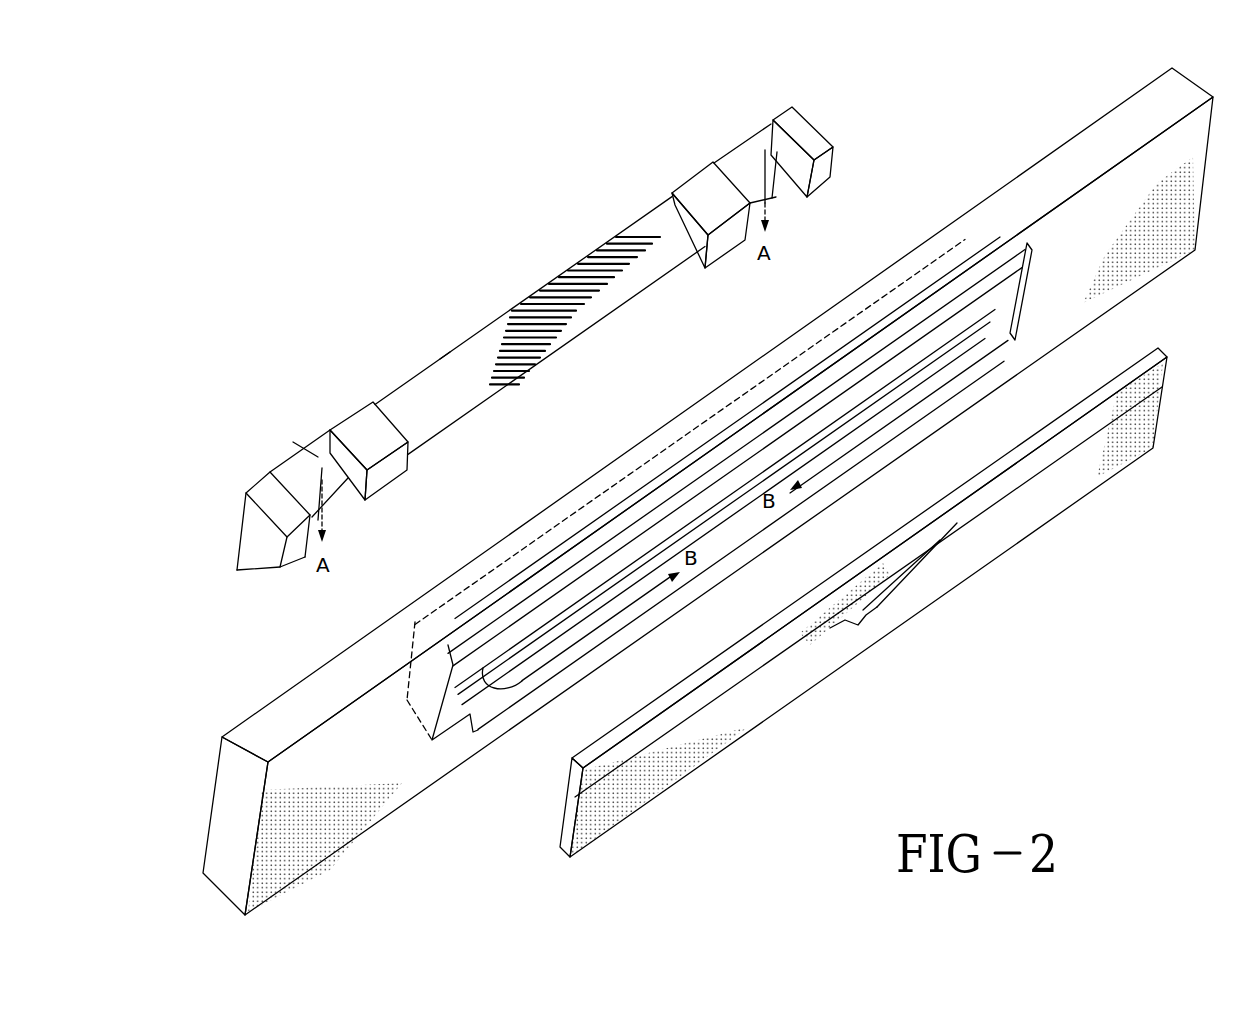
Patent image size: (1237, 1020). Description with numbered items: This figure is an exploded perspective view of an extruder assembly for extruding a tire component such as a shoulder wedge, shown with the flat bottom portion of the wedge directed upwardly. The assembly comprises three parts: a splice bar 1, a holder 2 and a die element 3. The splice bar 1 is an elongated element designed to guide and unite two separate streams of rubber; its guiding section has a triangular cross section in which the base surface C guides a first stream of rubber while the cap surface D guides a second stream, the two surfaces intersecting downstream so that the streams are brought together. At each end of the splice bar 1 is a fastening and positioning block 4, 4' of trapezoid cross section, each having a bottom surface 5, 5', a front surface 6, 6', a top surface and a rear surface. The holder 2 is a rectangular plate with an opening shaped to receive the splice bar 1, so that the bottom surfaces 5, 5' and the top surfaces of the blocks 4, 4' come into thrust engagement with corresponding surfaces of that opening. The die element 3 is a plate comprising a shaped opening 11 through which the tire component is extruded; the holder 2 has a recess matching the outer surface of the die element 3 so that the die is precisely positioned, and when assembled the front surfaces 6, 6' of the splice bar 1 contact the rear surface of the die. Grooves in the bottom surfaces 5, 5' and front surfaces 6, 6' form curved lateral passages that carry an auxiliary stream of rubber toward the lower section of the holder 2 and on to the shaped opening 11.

The splice bar 1 is at (556, 275).
The holder 2 is at (1000, 205).
The die element 3 is at (1022, 532).
The fastening and positioning block 4 is at (303, 447).
The bottom surface 5 is at (270, 457).
The front surface 6 is at (367, 516).
The fastening and positioning block 4' is at (742, 125).
The bottom surface 5' is at (750, 116).
The front surface 6' is at (792, 242).
The shaped opening 11 is at (863, 610).
The base surface C is at (467, 362).
The cap surface D is at (540, 362).